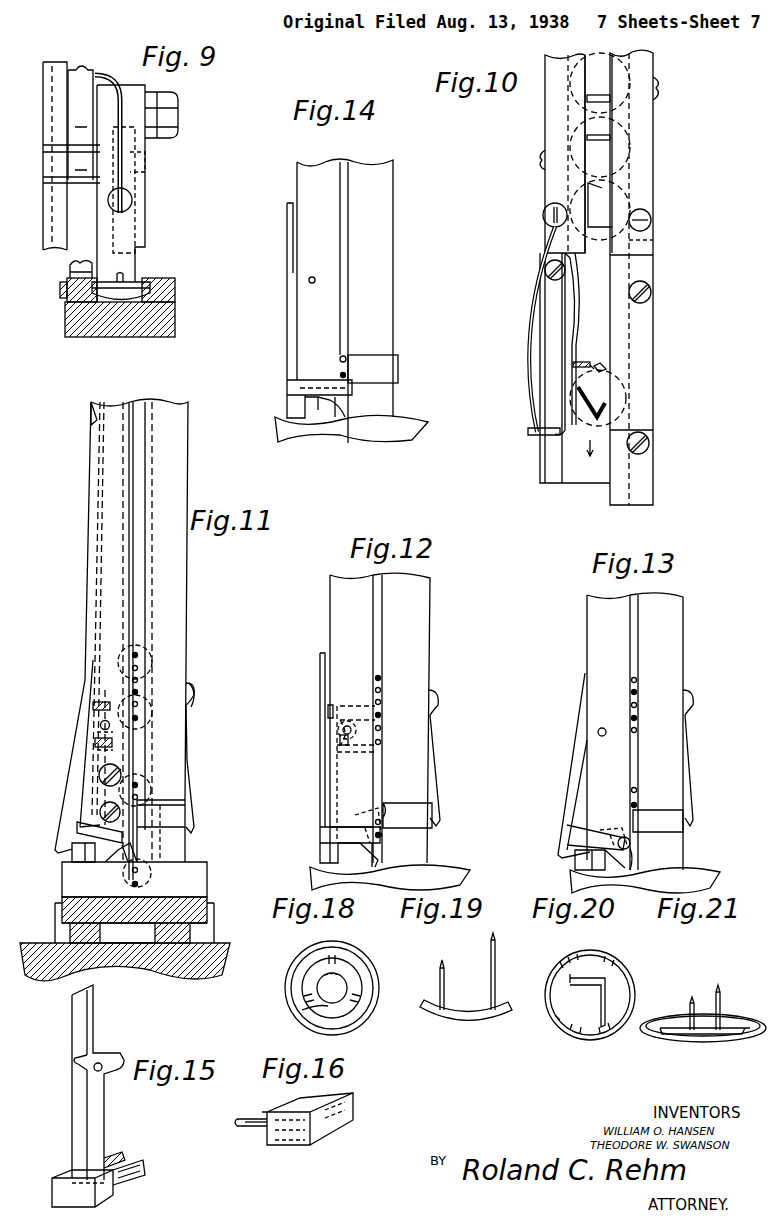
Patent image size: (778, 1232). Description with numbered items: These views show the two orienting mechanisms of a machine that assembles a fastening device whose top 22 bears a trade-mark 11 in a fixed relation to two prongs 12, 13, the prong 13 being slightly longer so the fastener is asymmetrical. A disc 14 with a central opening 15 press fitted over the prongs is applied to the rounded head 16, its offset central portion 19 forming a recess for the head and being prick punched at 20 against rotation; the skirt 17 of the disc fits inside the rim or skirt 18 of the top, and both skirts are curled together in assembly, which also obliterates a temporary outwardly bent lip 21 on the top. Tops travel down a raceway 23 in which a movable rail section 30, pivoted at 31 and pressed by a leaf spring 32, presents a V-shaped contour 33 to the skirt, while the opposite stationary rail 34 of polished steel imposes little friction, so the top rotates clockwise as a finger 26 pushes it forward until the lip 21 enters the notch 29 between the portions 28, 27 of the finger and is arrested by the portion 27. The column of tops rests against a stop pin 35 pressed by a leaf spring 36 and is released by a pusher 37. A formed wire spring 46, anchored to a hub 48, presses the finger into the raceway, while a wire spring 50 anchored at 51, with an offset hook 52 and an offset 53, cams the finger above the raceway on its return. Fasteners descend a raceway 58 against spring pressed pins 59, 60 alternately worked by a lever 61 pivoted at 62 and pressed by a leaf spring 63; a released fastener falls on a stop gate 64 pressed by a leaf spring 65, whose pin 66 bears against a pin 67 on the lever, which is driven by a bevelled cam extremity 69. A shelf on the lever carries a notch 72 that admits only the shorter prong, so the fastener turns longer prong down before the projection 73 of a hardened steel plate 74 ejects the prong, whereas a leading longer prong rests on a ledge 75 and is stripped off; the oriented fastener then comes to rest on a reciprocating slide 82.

In FIG. 20, the trade-mark 11 is at (606, 993).
In FIG. 12, the prong 12 is at (382, 696).
In FIG. 19, the prong 12 is at (445, 982).
In FIG. 21, the prong 12 is at (692, 1013).
In FIG. 14, the prong 13 is at (350, 372).
In FIG. 11, the prong 13 is at (142, 884).
In FIG. 12, the prong 13 is at (382, 680).
In FIG. 19, the prong 13 is at (490, 960).
In FIG. 21, the prong 13 is at (718, 1007).
In FIG. 18, the disc 14 is at (385, 993).
In FIG. 18, the central opening 15 is at (342, 985).
In FIG. 19, the head 16 is at (472, 1024).
In FIG. 21, the head 16 is at (703, 1028).
In FIG. 18, the skirt 17 is at (365, 958).
In FIG. 20, the rim or skirt 18 is at (614, 965).
In FIG. 18, the central portion 19 is at (355, 1012).
In FIG. 18, the indentation 20 is at (301, 1000).
In FIG. 10, the lip 21 is at (598, 398).
In FIG. 20, the lip 21 is at (552, 1018).
In FIG. 9, the top 22 is at (121, 296).
In FIG. 10, the top 22 is at (586, 430).
In FIG. 20, the top 22 is at (622, 1040).
In FIG. 9, the raceway 23 is at (175, 330).
In FIG. 10, the raceway 23 is at (640, 168).
In FIG. 9, the finger 26 is at (135, 242).
In FIG. 10, the finger 26 is at (606, 368).
In FIG. 10, the portion of finger 27 is at (603, 366).
In FIG. 10, the portion of finger 28 is at (578, 360).
In FIG. 9, the notch 29 is at (125, 280).
In FIG. 10, the notch 29 is at (596, 353).
In FIG. 9, the movable rail section 30 is at (70, 300).
In FIG. 10, the movable rail section 30 is at (547, 473).
In FIG. 10, the pivot 31 is at (545, 271).
In FIG. 9, the leaf spring 32 is at (60, 290).
In FIG. 10, the leaf spring 32 is at (529, 336).
In FIG. 9, the V-shaped contour 33 is at (85, 308).
In FIG. 9, the stationary rail 34 is at (175, 290).
In FIG. 10, the stationary rail 34 is at (640, 420).
In FIG. 10, the stop pin 35 is at (654, 240).
In FIG. 10, the leaf spring 36 is at (652, 210).
In FIG. 9, the pusher 37 is at (150, 145).
In FIG. 9, the wire spring 46 is at (116, 76).
In FIG. 9, the hub 48 is at (85, 80).
In FIG. 9, the wire spring 50 is at (70, 268).
In FIG. 10, the wire spring 50 is at (579, 310).
In FIG. 10, the anchor 51 is at (542, 218).
In FIG. 10, the offset hook 52 is at (528, 431).
In FIG. 10, the offset 53 is at (579, 290).
In FIG. 11, the raceway 58 is at (182, 632).
In FIG. 11, the spring pressed pin 59 is at (93, 706).
In FIG. 11, the spring pressed pin 60 is at (95, 743).
In FIG. 14, the lever 61 is at (287, 368).
In FIG. 11, the lever 61 is at (73, 782).
In FIG. 12, the lever 61 is at (320, 800).
In FIG. 13, the lever 61 is at (572, 795).
In FIG. 15, the lever 61 is at (76, 1080).
In FIG. 11, the pivot 62 is at (100, 725).
In FIG. 11, the leaf spring 63 is at (98, 545).
In FIG. 11, the stop gate 64 is at (178, 827).
In FIG. 12, the stop gate 64 is at (428, 830).
In FIG. 13, the stop gate 64 is at (658, 821).
In FIG. 16, the stop gate 64 is at (345, 1112).
In FIG. 11, the leaf spring 65 is at (196, 783).
In FIG. 12, the leaf spring 65 is at (442, 780).
In FIG. 13, the leaf spring 65 is at (688, 758).
In FIG. 11, the pin 66 is at (158, 825).
In FIG. 16, the pin 66 is at (242, 1128).
In FIG. 11, the pin 67 is at (60, 832).
In FIG. 15, the pin 67 is at (113, 1155).
In FIG. 11, the bevelled cam extremity 69 is at (72, 860).
In FIG. 13, the bevelled cam extremity 69 is at (576, 865).
In FIG. 15, the notch 72 is at (133, 1167).
In FIG. 11, the projection 73 is at (115, 850).
In FIG. 12, the projection 73 is at (360, 830).
In FIG. 13, the projection 73 is at (606, 830).
In FIG. 11, the hardened steel plate 74 is at (92, 795).
In FIG. 15, the ledge 75 is at (115, 1187).
In FIG. 11, the reciprocating slide 82 is at (200, 900).